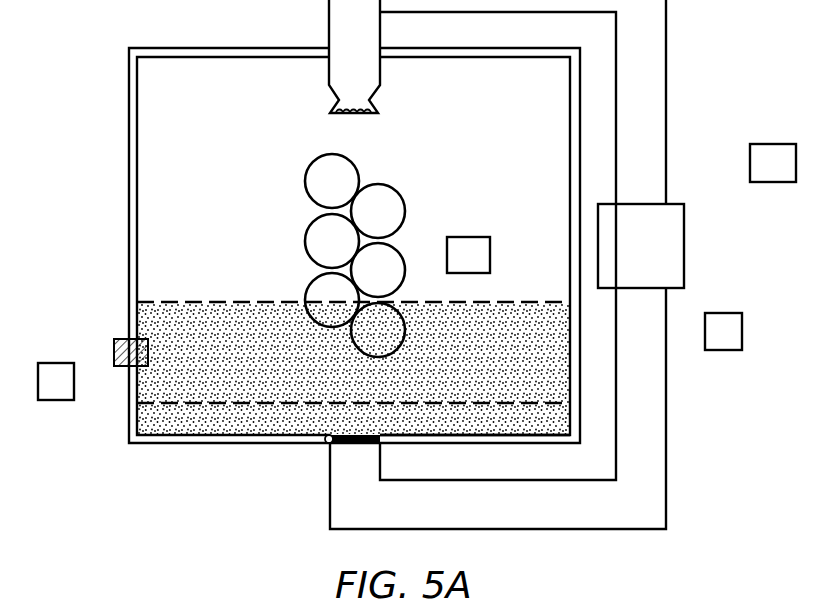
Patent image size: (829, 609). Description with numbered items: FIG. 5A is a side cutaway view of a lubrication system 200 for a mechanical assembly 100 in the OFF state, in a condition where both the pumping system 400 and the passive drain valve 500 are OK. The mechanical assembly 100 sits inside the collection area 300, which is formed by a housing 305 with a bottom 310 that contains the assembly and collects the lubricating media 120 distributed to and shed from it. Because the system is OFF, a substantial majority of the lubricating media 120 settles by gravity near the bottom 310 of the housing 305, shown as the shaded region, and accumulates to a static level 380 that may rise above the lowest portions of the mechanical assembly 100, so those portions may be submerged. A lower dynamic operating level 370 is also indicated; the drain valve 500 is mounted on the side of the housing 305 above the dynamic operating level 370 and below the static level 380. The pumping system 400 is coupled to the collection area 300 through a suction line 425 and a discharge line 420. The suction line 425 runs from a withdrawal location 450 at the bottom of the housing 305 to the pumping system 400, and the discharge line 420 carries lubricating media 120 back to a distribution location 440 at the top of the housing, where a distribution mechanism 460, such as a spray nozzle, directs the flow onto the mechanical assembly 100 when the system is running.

The mechanical assembly 100 is at (400, 240).
The lubricating media 120 is at (188, 433).
The lubrication system 200 is at (704, 148).
The collection area 300 is at (129, 108).
The housing 305 is at (137, 203).
The bottom 310 is at (440, 435).
The dynamic operating level 370 is at (137, 403).
The static level 380 is at (137, 302).
The pumping system 400 is at (676, 288).
The discharge line 420 is at (666, 10).
The suction line 425 is at (606, 530).
The distribution location 440 is at (407, 69).
The distribution mechanism 460 is at (373, 113).
The withdrawal location 450 is at (325, 444).
The passive drain valve 500 is at (114, 350).